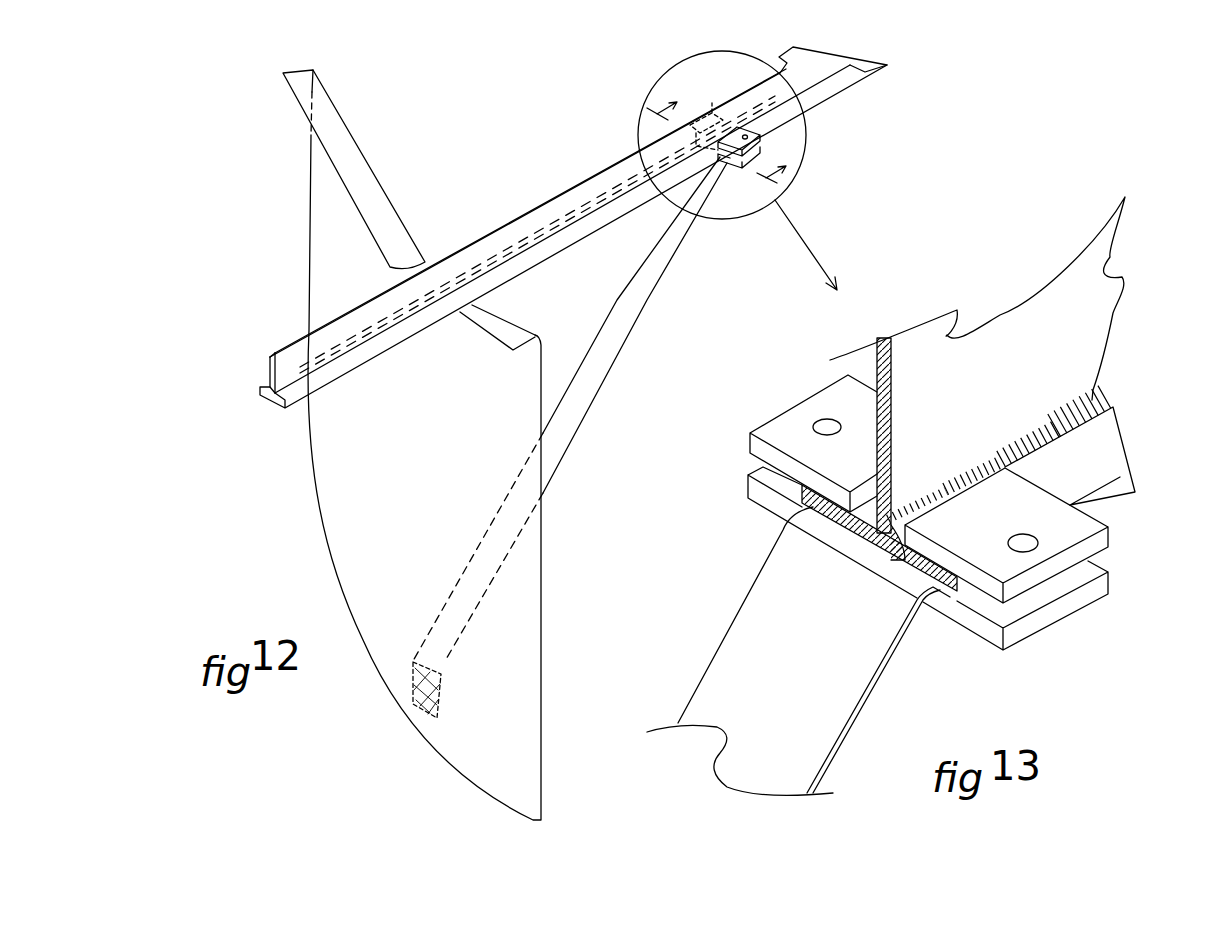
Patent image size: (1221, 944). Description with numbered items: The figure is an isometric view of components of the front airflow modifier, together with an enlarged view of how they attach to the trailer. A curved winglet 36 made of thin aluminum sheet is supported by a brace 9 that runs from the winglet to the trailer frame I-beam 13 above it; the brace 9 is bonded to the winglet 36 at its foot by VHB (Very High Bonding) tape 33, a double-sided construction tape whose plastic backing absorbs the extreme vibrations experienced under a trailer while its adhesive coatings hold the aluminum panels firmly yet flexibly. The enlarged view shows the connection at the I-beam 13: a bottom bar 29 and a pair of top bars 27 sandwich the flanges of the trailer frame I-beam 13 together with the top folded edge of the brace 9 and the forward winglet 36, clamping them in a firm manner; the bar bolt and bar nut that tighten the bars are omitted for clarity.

In FIG. 12, the brace 9 is at (565, 415).
In FIG. 13, the brace 9 is at (783, 633).
In FIG. 12, the trailer frame I-beam 13 is at (273, 396).
In FIG. 13, the trailer frame I-beam 13 is at (1010, 360).
In FIG. 13, the top bar 27 is at (778, 433).
In FIG. 13, the bottom bar 29 is at (990, 632).
In FIG. 12, the VHB (Very High Bonding) tape 33 is at (413, 693).
In FIG. 12, the winglet 36 is at (371, 525).